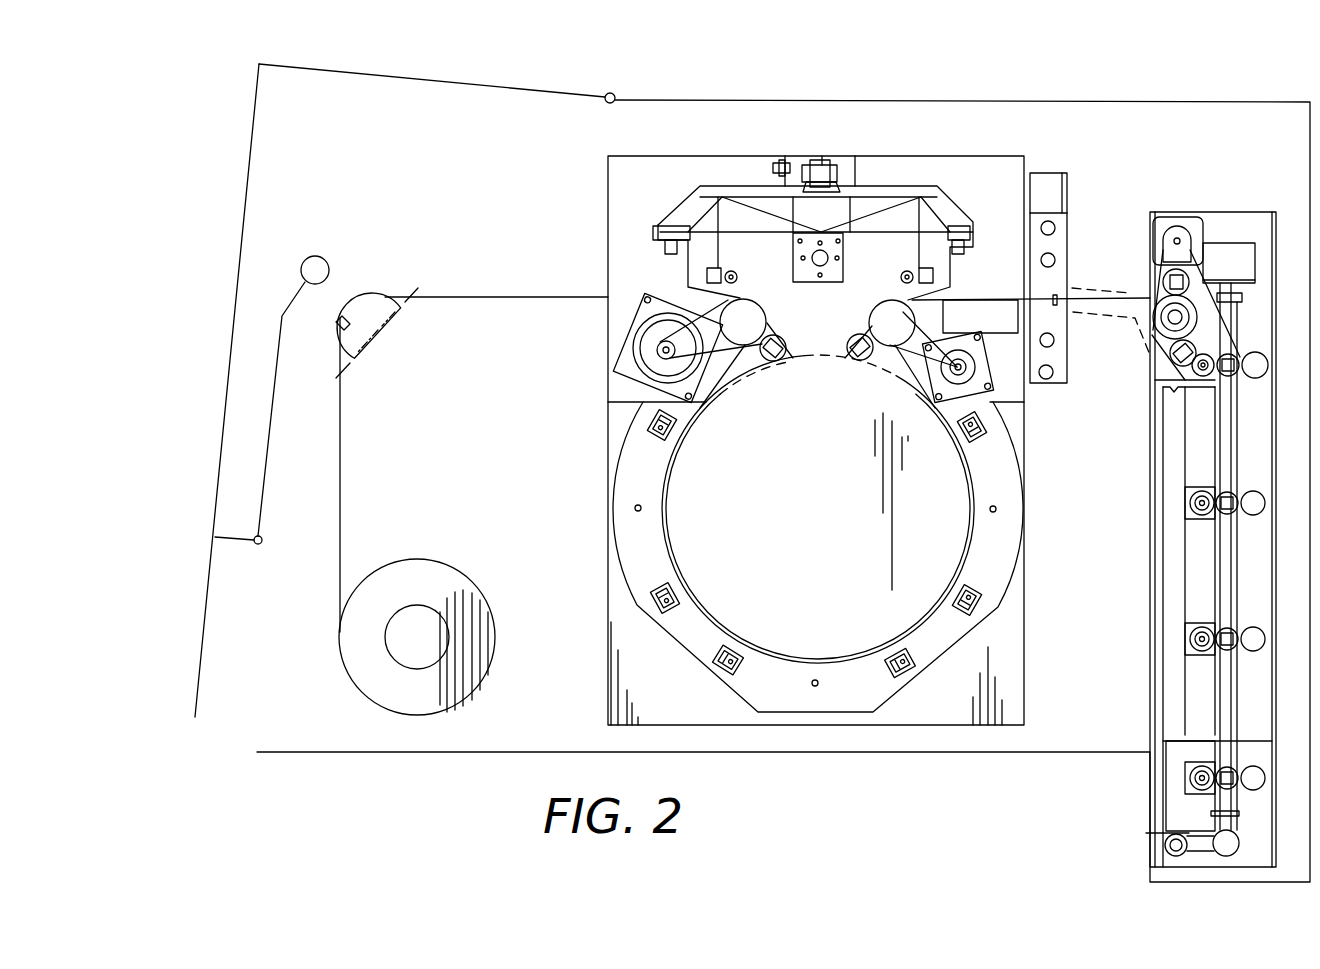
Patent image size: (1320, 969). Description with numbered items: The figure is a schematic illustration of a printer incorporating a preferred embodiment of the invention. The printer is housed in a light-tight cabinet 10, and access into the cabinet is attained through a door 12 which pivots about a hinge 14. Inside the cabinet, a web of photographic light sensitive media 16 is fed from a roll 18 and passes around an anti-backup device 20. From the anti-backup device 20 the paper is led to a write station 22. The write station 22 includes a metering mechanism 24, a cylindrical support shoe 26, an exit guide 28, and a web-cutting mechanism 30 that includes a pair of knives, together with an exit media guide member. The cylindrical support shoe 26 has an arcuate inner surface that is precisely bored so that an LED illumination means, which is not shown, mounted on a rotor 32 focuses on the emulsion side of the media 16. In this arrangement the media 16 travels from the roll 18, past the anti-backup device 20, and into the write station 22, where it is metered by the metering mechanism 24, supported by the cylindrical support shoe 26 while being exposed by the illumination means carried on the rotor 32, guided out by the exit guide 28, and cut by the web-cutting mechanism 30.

The light-tight cabinet 10 is at (813, 100).
The door 12 is at (250, 172).
The hinge 14 is at (610, 92).
The web of photographic light sensitive media 16 is at (340, 428).
The roll 18 is at (438, 580).
The anti-backup device 20 is at (392, 262).
The write station 22 is at (580, 240).
The metering mechanism 24 is at (790, 317).
The cylindrical support shoe 26 is at (1000, 652).
The exit guide 28 is at (869, 296).
The web-cutting mechanism 30 is at (1058, 243).
The rotor 32 is at (1208, 190).